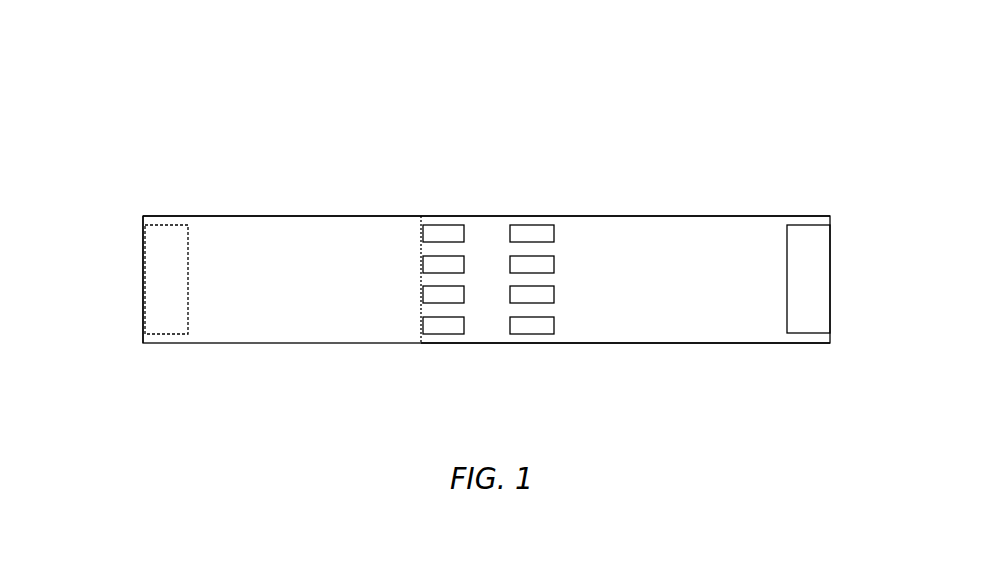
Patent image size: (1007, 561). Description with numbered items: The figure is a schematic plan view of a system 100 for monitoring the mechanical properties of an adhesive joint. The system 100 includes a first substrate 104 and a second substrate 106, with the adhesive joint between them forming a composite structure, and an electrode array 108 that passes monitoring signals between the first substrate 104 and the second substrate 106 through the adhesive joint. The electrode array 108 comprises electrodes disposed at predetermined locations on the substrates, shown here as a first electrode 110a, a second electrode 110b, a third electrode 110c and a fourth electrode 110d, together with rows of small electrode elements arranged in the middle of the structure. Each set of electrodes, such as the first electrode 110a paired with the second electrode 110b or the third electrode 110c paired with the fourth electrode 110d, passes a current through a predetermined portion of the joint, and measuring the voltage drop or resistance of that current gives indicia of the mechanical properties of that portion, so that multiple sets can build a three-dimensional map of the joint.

The system 100 is at (150, 63).
The first substrate 104 is at (737, 215).
The second substrate 106 is at (163, 215).
The electrode array 108 is at (782, 293).
The first electrode 110a is at (808, 283).
The second electrode 110b is at (172, 296).
The third electrode 110c is at (535, 343).
The fourth electrode 110d is at (445, 328).